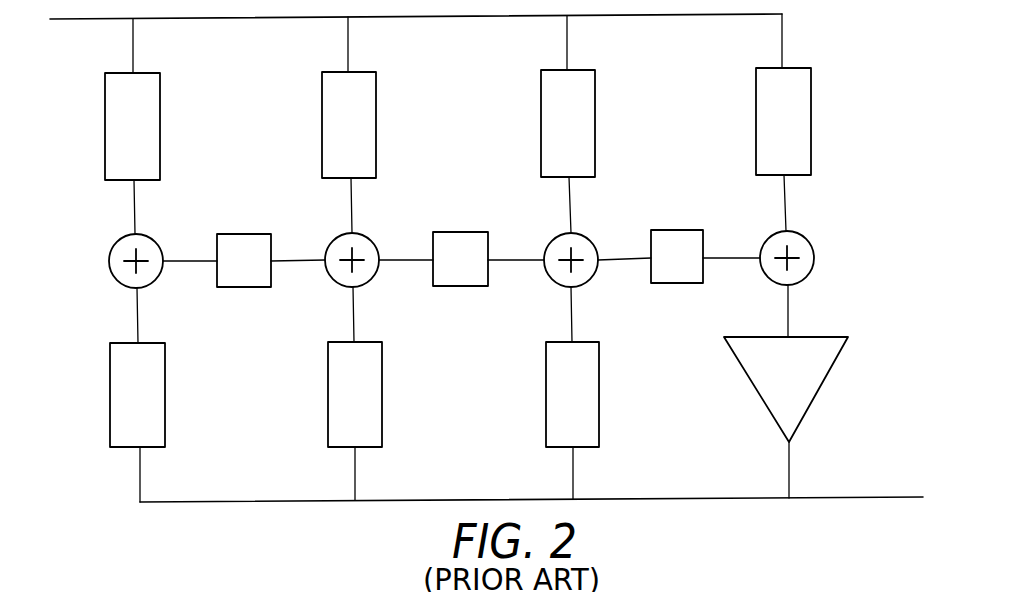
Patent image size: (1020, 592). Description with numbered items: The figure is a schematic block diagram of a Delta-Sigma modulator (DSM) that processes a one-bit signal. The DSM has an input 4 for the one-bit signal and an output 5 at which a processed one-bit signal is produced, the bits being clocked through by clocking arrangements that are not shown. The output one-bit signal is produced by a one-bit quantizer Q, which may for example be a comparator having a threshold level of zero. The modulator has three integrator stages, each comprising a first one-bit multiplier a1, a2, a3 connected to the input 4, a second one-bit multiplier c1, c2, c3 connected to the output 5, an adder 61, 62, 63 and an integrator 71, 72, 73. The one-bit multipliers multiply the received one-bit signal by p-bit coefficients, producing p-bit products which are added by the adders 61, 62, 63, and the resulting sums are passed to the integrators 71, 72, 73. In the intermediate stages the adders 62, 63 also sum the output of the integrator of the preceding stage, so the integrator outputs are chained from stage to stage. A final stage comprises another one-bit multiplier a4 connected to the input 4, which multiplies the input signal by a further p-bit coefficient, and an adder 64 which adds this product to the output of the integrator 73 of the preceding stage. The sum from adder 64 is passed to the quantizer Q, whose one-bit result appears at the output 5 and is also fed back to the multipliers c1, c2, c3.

The input 4 is at (75, 20).
The output 5 is at (869, 497).
The first 1-bit multiplier a1 is at (128, 155).
The first 1-bit multiplier a2 is at (337, 157).
The first 1-bit multiplier a3 is at (556, 153).
The 1-bit multiplier a4 is at (770, 152).
The adder 61 is at (128, 282).
The adder 62 is at (340, 282).
The adder 63 is at (562, 281).
The adder 64 is at (775, 278).
The integrator 71 is at (246, 245).
The integrator 72 is at (465, 242).
The integrator 73 is at (679, 239).
The second 1-bit multiplier c1 is at (130, 425).
The second 1-bit multiplier c2 is at (335, 425).
The second 1-bit multiplier c3 is at (555, 425).
The 1-bit quantizer Q is at (783, 373).